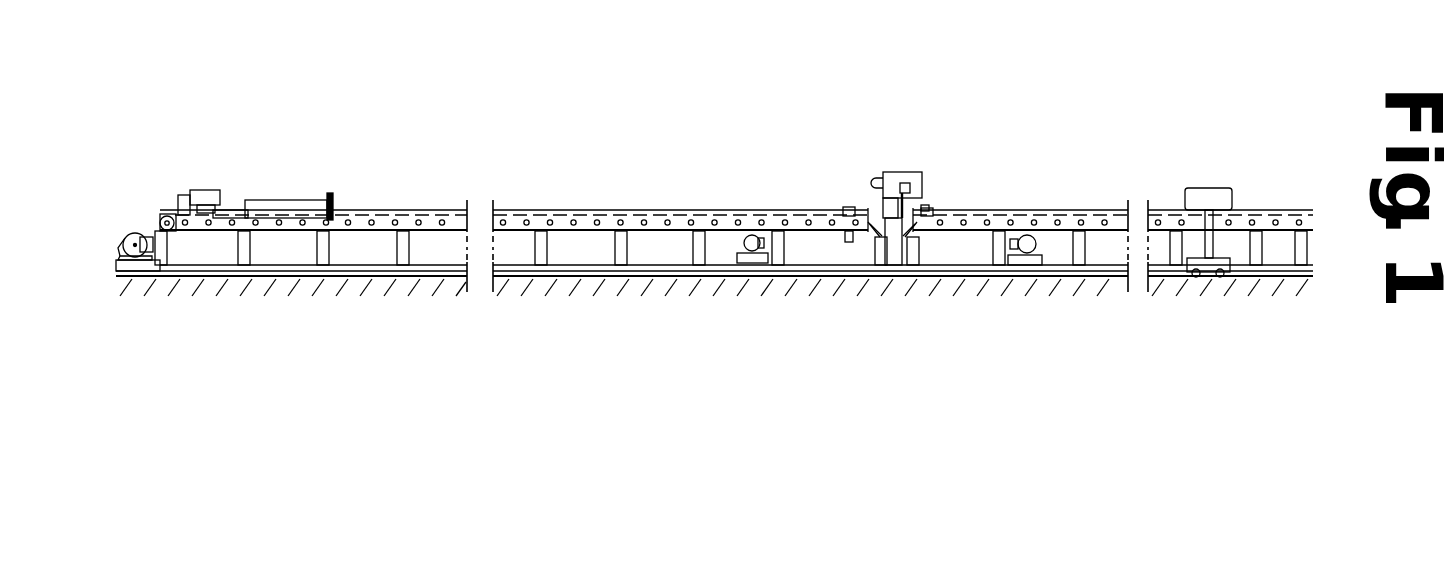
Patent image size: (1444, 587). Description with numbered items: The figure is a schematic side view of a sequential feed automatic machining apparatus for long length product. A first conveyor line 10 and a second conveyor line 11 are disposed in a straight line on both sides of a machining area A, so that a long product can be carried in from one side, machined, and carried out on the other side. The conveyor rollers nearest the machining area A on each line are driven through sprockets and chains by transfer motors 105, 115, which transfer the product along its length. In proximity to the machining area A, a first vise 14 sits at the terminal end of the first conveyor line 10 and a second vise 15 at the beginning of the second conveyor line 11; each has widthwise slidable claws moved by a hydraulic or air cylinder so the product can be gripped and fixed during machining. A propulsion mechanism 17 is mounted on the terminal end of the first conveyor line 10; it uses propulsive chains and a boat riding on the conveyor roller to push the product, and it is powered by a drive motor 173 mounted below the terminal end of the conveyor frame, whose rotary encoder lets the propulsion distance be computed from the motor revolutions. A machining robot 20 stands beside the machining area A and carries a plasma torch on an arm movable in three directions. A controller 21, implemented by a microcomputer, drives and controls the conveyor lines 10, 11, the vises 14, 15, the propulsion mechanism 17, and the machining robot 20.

The first conveyor line 10 is at (592, 198).
The second conveyor line 11 is at (1097, 200).
The first vise 14 is at (847, 207).
The second vise 15 is at (933, 210).
The propulsion mechanism 17 is at (287, 195).
The drive motor 173 is at (135, 232).
The machining robot 20 is at (888, 170).
The controller 21 is at (1210, 197).
The machining area A is at (929, 199).
The transfer motor 105 is at (752, 247).
The transfer motor 115 is at (1030, 253).